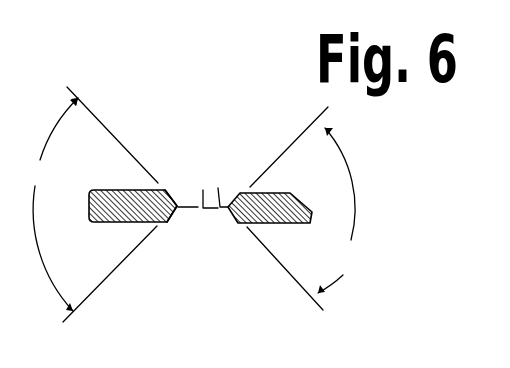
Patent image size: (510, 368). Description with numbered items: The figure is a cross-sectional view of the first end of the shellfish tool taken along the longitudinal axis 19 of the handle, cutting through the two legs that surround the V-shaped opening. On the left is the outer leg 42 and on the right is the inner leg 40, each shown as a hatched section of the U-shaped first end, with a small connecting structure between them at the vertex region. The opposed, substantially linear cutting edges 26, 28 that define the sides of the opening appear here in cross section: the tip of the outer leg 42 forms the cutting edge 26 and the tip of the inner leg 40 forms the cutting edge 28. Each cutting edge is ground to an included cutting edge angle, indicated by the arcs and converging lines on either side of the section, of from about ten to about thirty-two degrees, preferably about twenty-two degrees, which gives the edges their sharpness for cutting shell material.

The longitudinal axis 19 is at (203, 190).
The cutting edge 26 is at (177, 208).
The cutting edge 28 is at (220, 190).
The inner leg 40 is at (267, 225).
The outer leg 42 is at (121, 203).